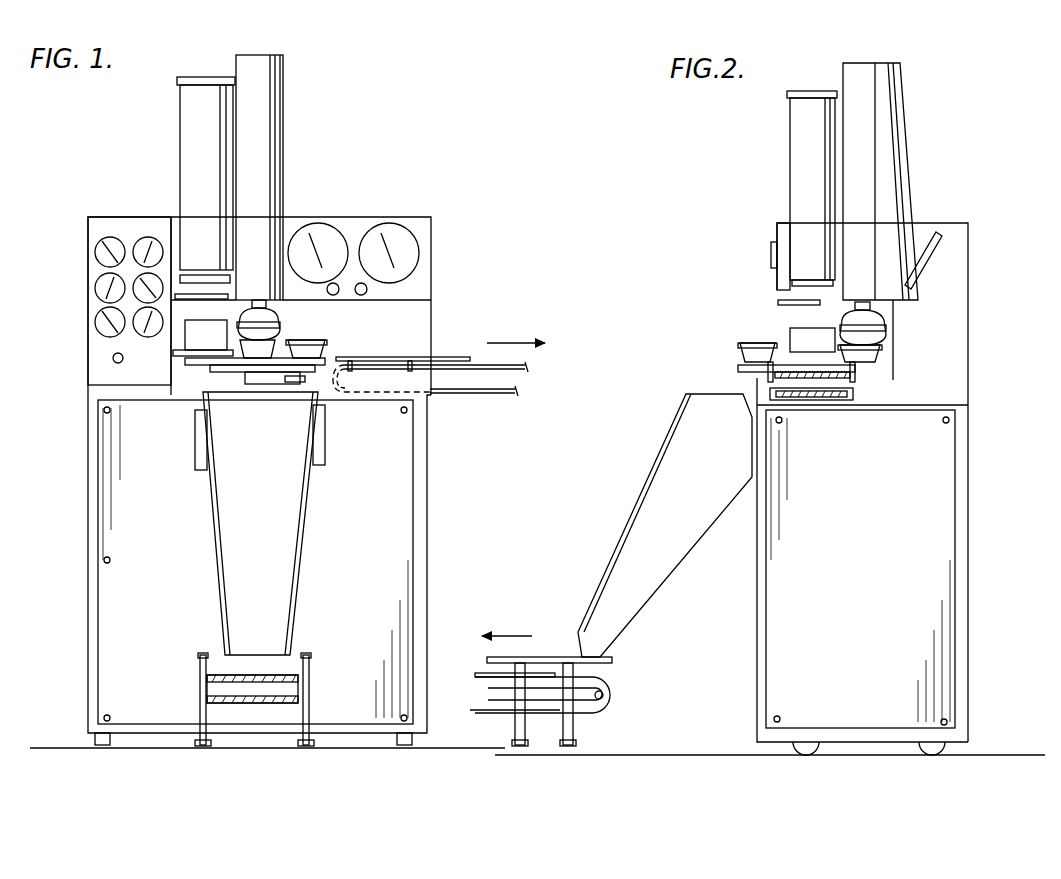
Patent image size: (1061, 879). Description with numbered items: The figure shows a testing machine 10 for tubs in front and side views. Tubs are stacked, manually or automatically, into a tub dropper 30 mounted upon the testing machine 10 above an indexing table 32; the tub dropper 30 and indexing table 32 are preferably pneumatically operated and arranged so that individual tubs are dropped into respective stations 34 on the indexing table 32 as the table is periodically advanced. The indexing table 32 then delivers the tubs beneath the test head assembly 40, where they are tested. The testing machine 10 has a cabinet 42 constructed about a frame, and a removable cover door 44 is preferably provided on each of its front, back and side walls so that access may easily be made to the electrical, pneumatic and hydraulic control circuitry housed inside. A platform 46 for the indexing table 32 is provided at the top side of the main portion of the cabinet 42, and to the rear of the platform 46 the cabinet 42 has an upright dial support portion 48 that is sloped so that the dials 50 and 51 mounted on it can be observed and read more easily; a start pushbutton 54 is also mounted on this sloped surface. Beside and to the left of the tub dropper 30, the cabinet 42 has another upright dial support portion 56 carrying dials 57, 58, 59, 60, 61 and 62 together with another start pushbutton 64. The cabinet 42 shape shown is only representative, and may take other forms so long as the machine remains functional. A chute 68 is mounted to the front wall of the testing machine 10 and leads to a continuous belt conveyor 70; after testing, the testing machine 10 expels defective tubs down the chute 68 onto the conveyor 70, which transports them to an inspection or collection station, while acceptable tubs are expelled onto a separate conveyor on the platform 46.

In FIG. 1, the testing machine 10 is at (328, 135).
In FIG. 2, the testing machine 10 is at (926, 152).
In FIG. 1, the tub dropper 30 is at (176, 150).
In FIG. 2, the tub dropper 30 is at (786, 160).
In FIG. 1, the test head assembly 40 is at (290, 105).
In FIG. 2, the test head assembly 40 is at (873, 106).
In FIG. 1, the upright dial support portion 48 is at (432, 248).
In FIG. 2, the upright dial support portion 48 is at (970, 248).
In FIG. 1, the dial 50 is at (310, 234).
In FIG. 1, the dial 51 is at (384, 234).
In FIG. 1, the start pushbutton 54 is at (366, 293).
In FIG. 1, the upright dial support portion 56 is at (86, 334).
In FIG. 1, the dial 57 is at (108, 237).
In FIG. 1, the dial 58 is at (147, 237).
In FIG. 1, the dial 59 is at (158, 290).
In FIG. 1, the dial 60 is at (95, 275).
In FIG. 1, the dial 61 is at (95, 318).
In FIG. 1, the dial 62 is at (156, 336).
In FIG. 1, the start pushbutton 64 is at (113, 360).
In FIG. 1, the station 34 is at (285, 346).
In FIG. 2, the station 34 is at (806, 355).
In FIG. 1, the indexing table 32 is at (336, 358).
In FIG. 2, the indexing table 32 is at (736, 366).
In FIG. 1, the platform 46 is at (190, 386).
In FIG. 2, the platform 46 is at (870, 382).
In FIG. 1, the cabinet 42 is at (428, 566).
In FIG. 2, the cabinet 42 is at (972, 497).
In FIG. 1, the removable cover door 44 is at (415, 518).
In FIG. 2, the removable cover door 44 is at (925, 466).
In FIG. 1, the chute 68 is at (272, 530).
In FIG. 2, the chute 68 is at (645, 472).
In FIG. 1, the continuous belt conveyor 70 is at (310, 690).
In FIG. 2, the continuous belt conveyor 70 is at (537, 652).